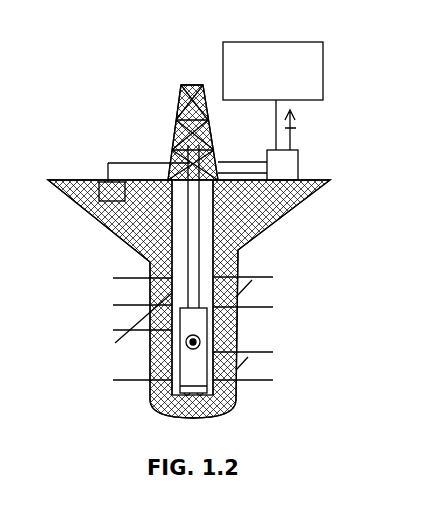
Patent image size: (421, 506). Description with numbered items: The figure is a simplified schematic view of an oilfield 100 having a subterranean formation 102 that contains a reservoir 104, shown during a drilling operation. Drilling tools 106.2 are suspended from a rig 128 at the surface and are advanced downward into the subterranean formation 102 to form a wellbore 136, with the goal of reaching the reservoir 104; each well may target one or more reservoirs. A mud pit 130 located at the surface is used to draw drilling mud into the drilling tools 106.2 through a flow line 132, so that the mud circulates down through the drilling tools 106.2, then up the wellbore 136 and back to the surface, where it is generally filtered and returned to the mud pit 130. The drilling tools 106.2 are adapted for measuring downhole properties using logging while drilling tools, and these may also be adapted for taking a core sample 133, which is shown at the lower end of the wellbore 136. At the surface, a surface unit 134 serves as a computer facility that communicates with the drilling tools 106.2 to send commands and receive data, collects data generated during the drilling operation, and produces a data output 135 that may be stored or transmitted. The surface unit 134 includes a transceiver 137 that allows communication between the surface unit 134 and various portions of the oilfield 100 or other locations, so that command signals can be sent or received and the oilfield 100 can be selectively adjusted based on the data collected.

The oilfield 100 is at (114, 92).
The subterranean formation 102 is at (286, 268).
The reservoir 104 is at (275, 340).
The drilling tools 106.2 is at (150, 326).
The rig 128 is at (174, 127).
The mud pit 130 is at (108, 202).
The flow line 132 is at (108, 163).
The core sample 133 is at (182, 392).
The surface unit 134 is at (298, 166).
The data output 135 is at (292, 42).
The wellbore 136 is at (214, 236).
The transceiver 137 is at (296, 128).